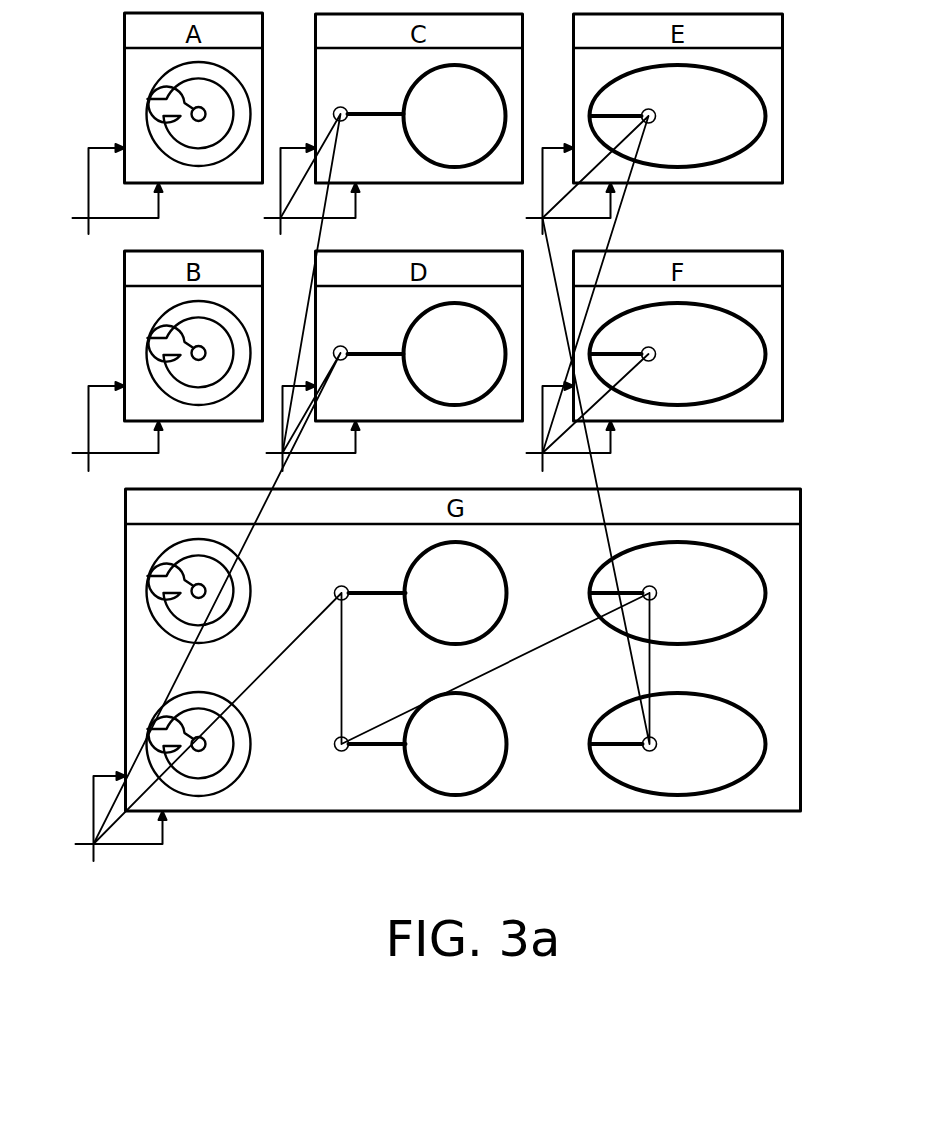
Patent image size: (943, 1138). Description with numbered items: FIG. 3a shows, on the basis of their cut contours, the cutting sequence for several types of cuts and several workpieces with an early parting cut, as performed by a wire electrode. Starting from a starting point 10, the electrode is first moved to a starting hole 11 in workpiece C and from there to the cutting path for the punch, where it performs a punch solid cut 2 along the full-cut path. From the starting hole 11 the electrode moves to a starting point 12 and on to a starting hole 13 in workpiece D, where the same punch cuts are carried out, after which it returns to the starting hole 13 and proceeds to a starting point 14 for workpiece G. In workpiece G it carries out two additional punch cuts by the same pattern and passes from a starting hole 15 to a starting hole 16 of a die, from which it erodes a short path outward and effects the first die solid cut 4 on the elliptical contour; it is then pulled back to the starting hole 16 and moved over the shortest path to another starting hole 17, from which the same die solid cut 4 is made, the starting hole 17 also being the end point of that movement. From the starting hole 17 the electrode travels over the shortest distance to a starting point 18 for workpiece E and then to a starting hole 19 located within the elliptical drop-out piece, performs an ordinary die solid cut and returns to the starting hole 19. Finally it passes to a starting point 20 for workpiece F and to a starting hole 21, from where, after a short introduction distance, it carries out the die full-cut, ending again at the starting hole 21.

The punch solid cut 2 is at (502, 92).
The die solid cut 4 is at (752, 90).
The starting point 10 is at (280, 217).
The starting hole 11 is at (337, 106).
The starting point 12 is at (282, 452).
The starting hole 13 is at (337, 345).
The starting point 14 is at (93, 843).
The starting hole 15 is at (341, 584).
The starting hole 16 is at (645, 588).
The starting hole 17 is at (653, 741).
The starting point 18 is at (542, 217).
The starting hole 19 is at (644, 111).
The starting point 20 is at (542, 452).
The starting hole 21 is at (641, 350).